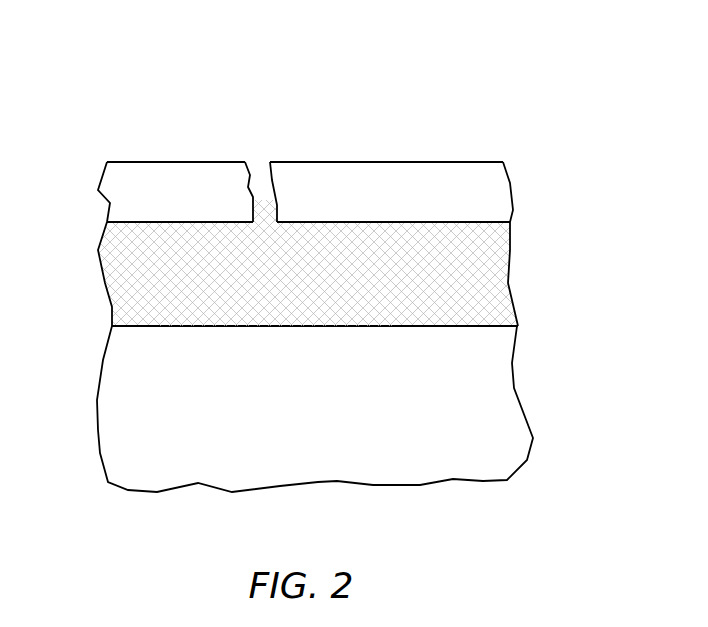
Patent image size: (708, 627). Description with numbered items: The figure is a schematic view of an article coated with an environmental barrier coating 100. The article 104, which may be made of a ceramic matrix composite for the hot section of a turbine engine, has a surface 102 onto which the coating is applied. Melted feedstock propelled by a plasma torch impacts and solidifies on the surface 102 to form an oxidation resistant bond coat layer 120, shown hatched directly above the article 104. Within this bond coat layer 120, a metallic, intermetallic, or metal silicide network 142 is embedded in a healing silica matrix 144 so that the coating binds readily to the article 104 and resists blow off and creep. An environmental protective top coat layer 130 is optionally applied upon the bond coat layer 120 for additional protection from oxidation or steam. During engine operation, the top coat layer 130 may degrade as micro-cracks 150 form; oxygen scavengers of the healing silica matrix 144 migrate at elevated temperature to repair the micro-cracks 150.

The environmental barrier coating 100 is at (377, 132).
The surface 102 is at (149, 325).
The article 104 is at (320, 410).
The oxidation resistant bond coat layer 120 is at (312, 286).
The environmental protective top coat layer 130 is at (360, 207).
The metal silicide network 142 is at (477, 247).
The healing silica matrix 144 is at (480, 292).
The micro-cracks 150 is at (257, 177).